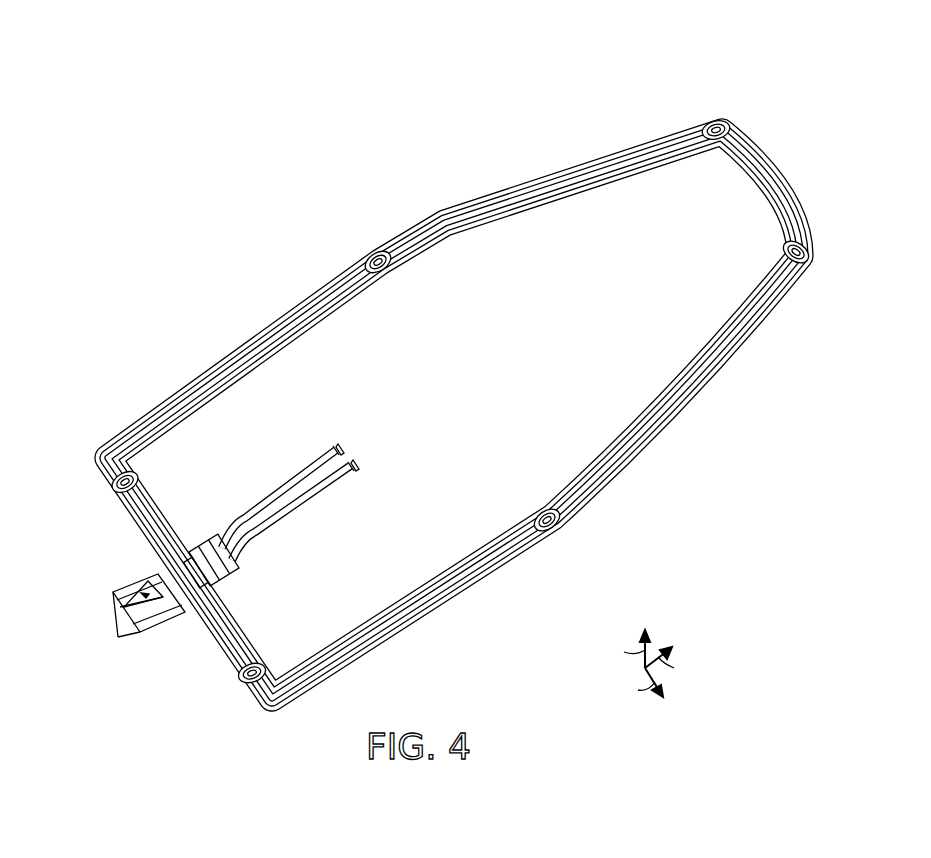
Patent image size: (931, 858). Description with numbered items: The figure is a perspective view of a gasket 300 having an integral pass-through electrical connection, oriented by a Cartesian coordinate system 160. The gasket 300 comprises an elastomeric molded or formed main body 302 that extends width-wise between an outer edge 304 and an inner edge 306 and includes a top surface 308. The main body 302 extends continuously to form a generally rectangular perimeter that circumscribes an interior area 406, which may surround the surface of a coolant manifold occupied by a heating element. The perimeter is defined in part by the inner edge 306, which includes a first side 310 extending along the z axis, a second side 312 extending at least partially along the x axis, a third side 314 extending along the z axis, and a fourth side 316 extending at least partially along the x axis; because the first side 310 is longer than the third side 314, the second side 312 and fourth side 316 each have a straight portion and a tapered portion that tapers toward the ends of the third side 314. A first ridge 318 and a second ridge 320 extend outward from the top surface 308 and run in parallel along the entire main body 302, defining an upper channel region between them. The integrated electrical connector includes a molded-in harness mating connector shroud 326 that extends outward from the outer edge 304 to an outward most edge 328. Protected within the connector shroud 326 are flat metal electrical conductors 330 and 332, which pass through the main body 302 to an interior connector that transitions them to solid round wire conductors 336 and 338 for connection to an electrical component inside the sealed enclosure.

The gasket 300 is at (757, 110).
The main body 302 is at (197, 383).
The outer edge 304 is at (225, 354).
The inner edge 306 is at (262, 366).
The top surface 308 is at (302, 333).
The first side 310 is at (157, 503).
The second side 312 is at (643, 426).
The third side 314 is at (769, 213).
The fourth side 316 is at (347, 300).
The first ridge 318 is at (483, 199).
The second ridge 320 is at (503, 207).
The molded-in harness mating connector shroud 326 is at (136, 632).
The outward most edge 328 is at (130, 622).
The electrical conductor 330 is at (204, 553).
The electrical conductor 332 is at (222, 572).
The solid wire conductor 336 is at (343, 442).
The solid wire conductor 338 is at (366, 467).
The interior area 406 is at (573, 355).
The Cartesian coordinate system 160 is at (684, 641).